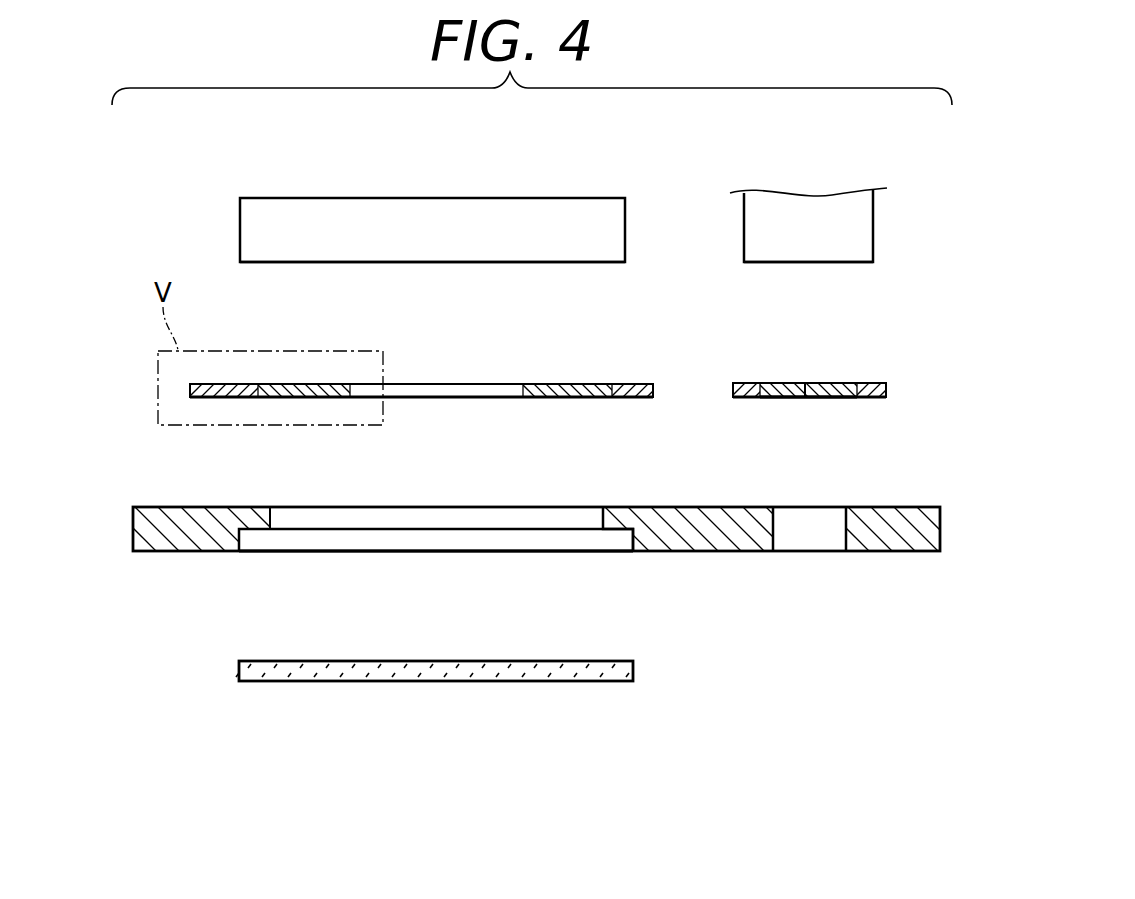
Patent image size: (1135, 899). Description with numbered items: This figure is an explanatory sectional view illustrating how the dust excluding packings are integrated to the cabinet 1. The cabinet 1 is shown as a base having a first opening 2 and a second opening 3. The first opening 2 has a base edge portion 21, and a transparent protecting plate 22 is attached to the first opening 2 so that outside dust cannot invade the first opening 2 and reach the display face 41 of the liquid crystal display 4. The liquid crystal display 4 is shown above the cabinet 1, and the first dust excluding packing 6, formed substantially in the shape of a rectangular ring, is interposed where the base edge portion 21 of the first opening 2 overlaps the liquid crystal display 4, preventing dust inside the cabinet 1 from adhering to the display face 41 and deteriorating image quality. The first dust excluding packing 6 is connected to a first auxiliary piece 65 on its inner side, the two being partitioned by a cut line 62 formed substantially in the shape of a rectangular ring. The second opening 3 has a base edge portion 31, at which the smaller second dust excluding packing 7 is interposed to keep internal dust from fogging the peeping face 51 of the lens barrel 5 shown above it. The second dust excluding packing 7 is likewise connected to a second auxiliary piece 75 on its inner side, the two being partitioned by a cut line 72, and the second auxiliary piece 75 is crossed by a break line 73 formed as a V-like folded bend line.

The cabinet 1 is at (548, 564).
The first opening 2 is at (415, 522).
The base edge portion 21 is at (613, 522).
The transparent protecting plate 22 is at (445, 681).
The second opening 3 is at (810, 540).
The base edge portion 31 is at (875, 535).
The liquid crystal display 4 is at (291, 208).
The display face 41 is at (362, 262).
The lens barrel 5 is at (857, 223).
The peeping face 51 is at (764, 260).
The first dust excluding packing 6 is at (424, 391).
The cut line 62 is at (265, 398).
The first auxiliary piece 65 is at (317, 398).
The second dust excluding packing 7 is at (812, 385).
The cut line 72 is at (756, 397).
The break line 73 is at (798, 397).
The second auxiliary piece 75 is at (822, 383).